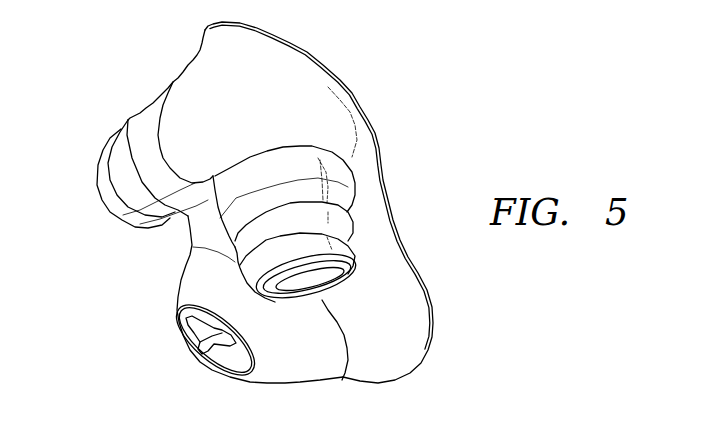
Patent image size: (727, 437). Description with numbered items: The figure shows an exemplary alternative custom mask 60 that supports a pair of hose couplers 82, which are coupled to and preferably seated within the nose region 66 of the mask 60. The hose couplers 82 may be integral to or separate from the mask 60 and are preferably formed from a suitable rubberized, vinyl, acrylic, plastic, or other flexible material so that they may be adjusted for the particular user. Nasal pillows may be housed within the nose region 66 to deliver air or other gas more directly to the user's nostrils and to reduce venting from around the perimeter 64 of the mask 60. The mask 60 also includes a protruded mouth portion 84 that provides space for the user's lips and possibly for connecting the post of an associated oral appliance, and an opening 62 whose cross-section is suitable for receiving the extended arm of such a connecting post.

The custom mask 60 is at (306, 202).
The opening 62 is at (213, 340).
The perimeter 64 is at (322, 187).
The nose region 66 is at (157, 143).
The hose couplers 82 is at (222, 213).
The mouth portion 84 is at (178, 236).